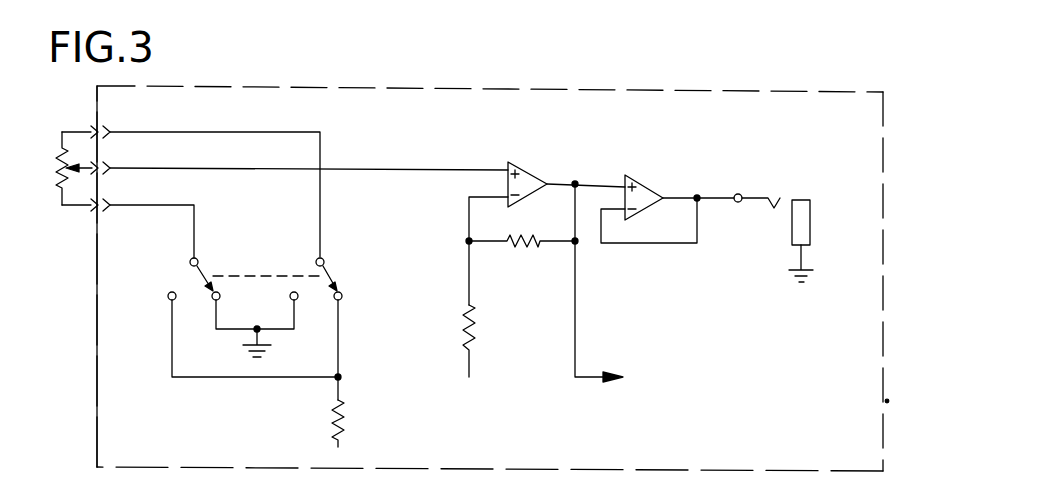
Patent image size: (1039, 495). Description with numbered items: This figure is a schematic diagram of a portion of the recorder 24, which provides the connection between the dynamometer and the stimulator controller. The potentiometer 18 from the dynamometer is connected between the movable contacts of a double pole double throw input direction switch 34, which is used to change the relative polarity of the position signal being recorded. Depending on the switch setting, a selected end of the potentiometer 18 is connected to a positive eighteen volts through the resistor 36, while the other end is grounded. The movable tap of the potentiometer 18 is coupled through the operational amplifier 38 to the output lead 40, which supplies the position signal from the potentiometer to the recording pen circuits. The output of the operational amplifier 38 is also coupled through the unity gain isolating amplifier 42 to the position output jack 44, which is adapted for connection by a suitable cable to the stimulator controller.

The potentiometer 18 is at (55, 188).
The recorder 24 is at (257, 86).
The input direction switch 34 is at (332, 249).
The resistor 36 is at (345, 409).
The operational amplifier 38 is at (531, 163).
The output lead 40 is at (575, 297).
The unity gain isolating amplifier 42 is at (645, 180).
The position output jack 44 is at (770, 206).